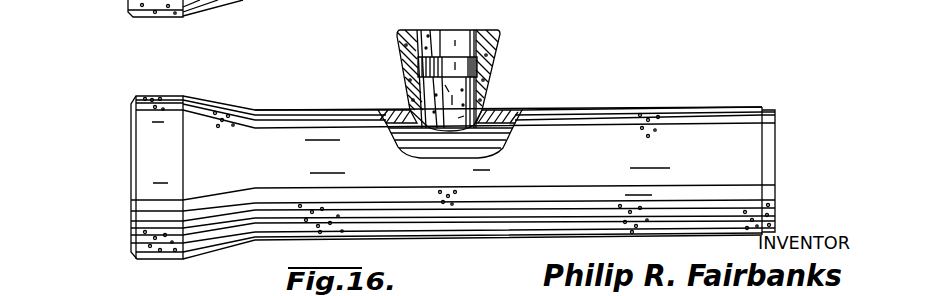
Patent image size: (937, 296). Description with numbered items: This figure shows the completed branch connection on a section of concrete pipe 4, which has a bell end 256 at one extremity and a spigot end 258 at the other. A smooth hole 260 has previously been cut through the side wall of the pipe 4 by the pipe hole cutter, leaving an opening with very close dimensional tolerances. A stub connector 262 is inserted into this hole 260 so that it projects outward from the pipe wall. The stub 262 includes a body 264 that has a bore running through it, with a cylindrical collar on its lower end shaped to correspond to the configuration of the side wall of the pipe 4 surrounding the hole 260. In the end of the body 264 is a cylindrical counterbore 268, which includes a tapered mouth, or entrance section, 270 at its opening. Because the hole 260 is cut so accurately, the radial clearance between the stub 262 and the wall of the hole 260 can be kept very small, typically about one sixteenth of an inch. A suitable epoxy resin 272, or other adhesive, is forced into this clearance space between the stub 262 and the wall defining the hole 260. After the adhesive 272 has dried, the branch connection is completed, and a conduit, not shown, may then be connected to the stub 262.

The pipe 4 is at (659, 108).
The bell end 256 is at (153, 117).
The spigot end 258 is at (767, 128).
The hole 260 is at (443, 137).
The stub connector 262 is at (398, 58).
The body 264 is at (496, 67).
The cylindrical counterbore 268 is at (477, 60).
The tapered mouth 270 is at (474, 48).
The epoxy resin 272 is at (409, 104).